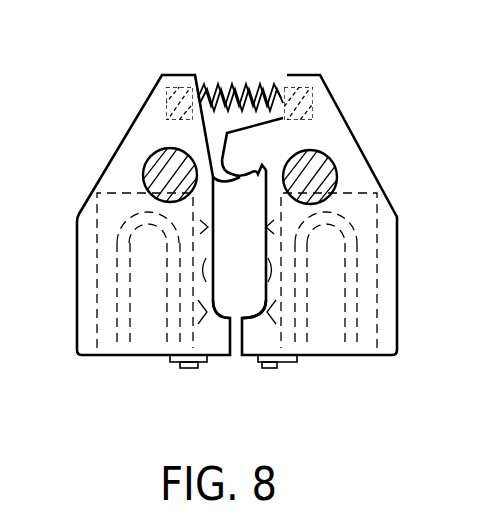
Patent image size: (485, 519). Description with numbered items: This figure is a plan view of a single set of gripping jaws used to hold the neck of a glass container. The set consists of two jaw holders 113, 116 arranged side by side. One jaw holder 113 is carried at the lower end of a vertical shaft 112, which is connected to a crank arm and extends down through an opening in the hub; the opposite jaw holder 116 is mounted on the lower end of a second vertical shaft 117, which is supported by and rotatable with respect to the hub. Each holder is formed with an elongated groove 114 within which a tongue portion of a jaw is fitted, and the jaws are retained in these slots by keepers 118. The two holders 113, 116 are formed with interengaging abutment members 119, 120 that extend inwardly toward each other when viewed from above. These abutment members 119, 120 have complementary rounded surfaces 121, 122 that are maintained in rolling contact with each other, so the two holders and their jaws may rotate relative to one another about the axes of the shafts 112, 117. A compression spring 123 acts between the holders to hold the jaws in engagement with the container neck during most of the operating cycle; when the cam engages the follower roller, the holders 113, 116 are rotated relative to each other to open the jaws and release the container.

The vertical shaft 112 is at (338, 173).
The jaw holder 113 is at (385, 328).
The elongated groove 114 is at (383, 270).
The jaw holder 116 is at (85, 253).
The vertical shaft 117 is at (142, 167).
The keepers 118 is at (258, 364).
The abutment member 119 is at (238, 90).
The abutment member 120 is at (239, 298).
The rounded surface 121 is at (243, 275).
The rounded surface 122 is at (257, 174).
The compression spring 123 is at (226, 88).